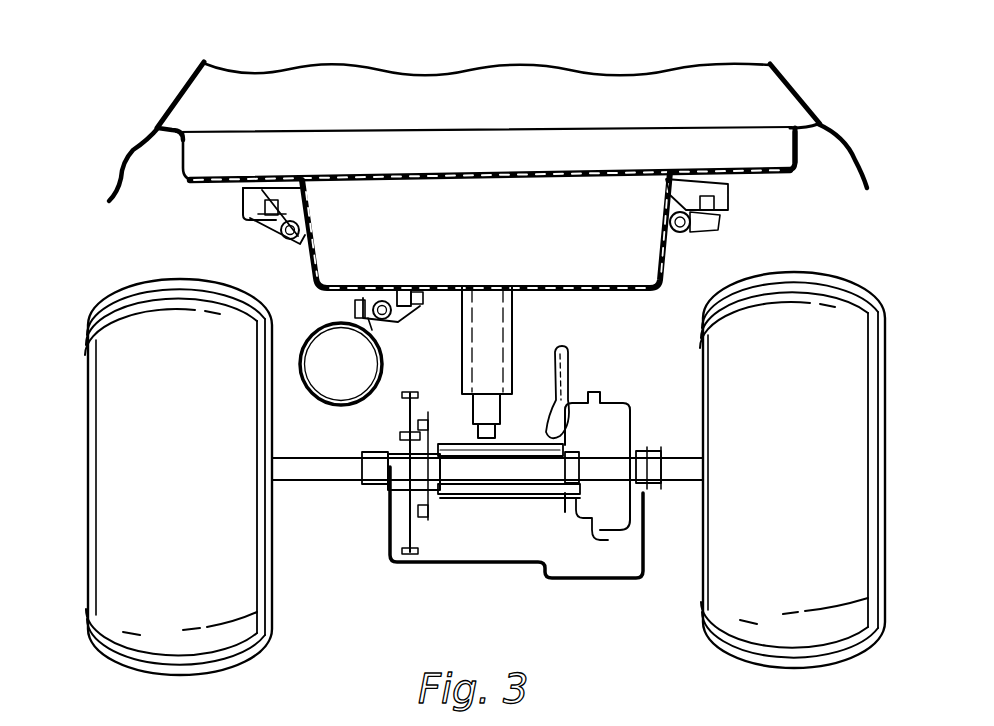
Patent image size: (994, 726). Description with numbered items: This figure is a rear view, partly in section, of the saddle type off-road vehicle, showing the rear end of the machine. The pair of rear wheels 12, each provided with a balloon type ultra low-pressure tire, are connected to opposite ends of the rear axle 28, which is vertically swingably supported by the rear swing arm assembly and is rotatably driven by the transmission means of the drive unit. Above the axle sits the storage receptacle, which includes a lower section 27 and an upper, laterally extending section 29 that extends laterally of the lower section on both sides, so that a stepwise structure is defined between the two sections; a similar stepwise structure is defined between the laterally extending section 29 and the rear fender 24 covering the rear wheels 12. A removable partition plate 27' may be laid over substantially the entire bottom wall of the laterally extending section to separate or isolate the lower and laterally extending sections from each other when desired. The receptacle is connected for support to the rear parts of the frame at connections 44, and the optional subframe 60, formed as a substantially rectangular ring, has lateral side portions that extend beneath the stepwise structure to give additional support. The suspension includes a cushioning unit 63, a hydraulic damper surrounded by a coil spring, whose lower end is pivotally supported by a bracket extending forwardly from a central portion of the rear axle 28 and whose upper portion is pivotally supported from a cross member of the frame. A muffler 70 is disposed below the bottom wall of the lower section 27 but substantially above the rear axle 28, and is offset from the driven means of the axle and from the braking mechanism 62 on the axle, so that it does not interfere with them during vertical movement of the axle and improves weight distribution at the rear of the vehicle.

The rear wheels 12 is at (90, 538).
The rear fender 24 is at (864, 166).
The lower section 27 is at (437, 230).
The removable partition plate 27' is at (464, 111).
The rear axle 28 is at (304, 484).
The laterally extending section 29 is at (800, 150).
The connections 44 is at (405, 287).
The subframe 60 is at (692, 248).
The braking mechanism 62 is at (608, 418).
The cushioning unit 63 is at (515, 331).
The muffler 70 is at (357, 377).